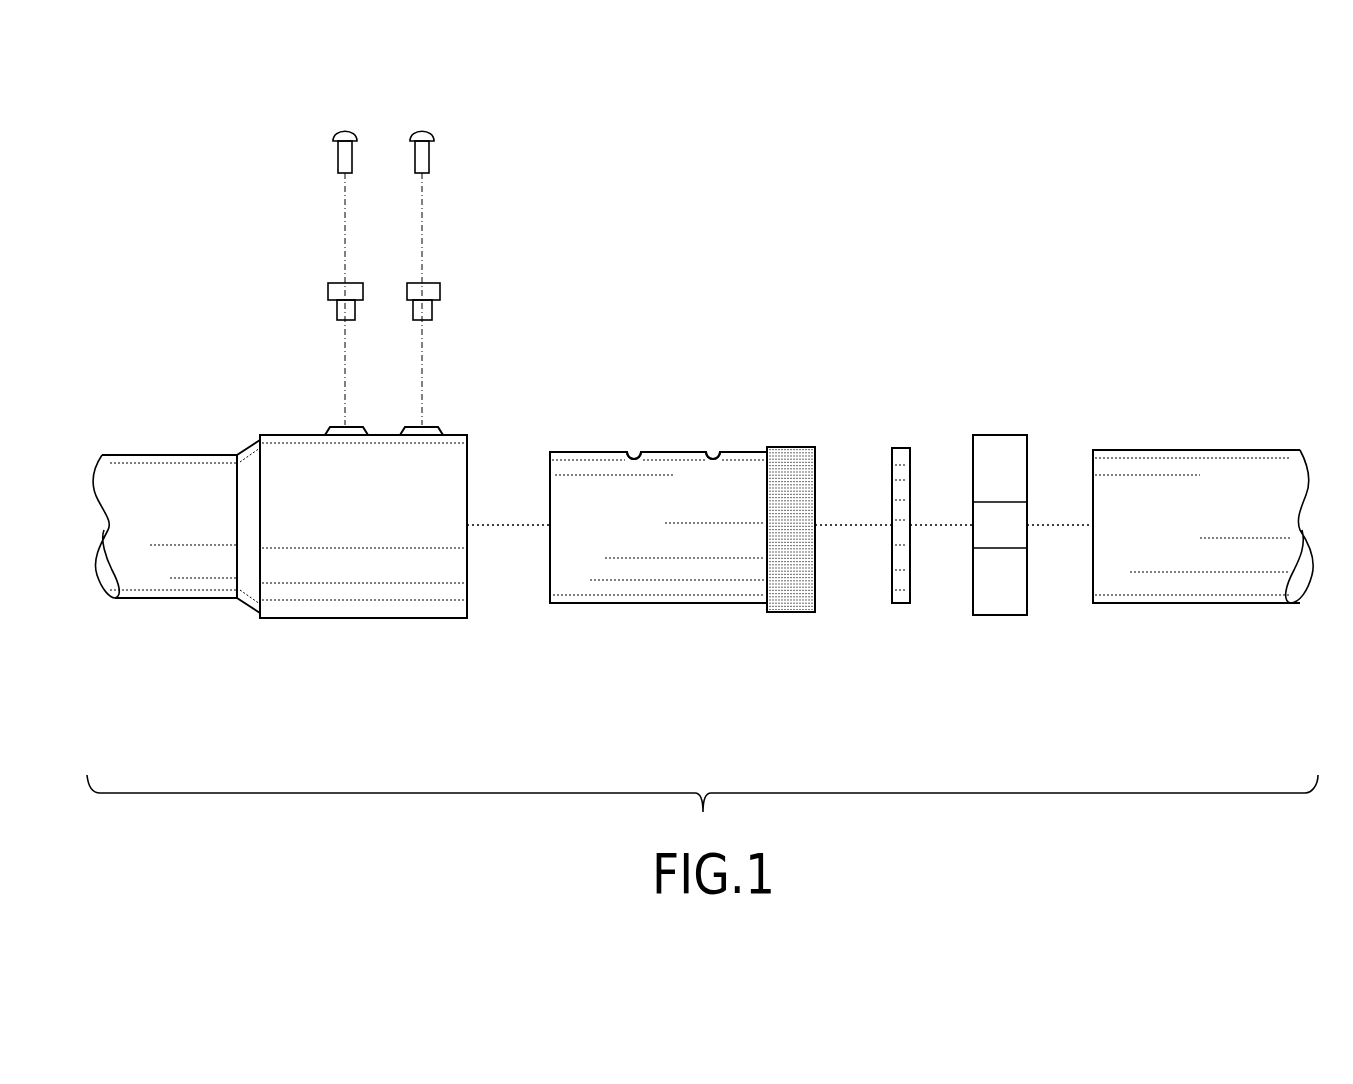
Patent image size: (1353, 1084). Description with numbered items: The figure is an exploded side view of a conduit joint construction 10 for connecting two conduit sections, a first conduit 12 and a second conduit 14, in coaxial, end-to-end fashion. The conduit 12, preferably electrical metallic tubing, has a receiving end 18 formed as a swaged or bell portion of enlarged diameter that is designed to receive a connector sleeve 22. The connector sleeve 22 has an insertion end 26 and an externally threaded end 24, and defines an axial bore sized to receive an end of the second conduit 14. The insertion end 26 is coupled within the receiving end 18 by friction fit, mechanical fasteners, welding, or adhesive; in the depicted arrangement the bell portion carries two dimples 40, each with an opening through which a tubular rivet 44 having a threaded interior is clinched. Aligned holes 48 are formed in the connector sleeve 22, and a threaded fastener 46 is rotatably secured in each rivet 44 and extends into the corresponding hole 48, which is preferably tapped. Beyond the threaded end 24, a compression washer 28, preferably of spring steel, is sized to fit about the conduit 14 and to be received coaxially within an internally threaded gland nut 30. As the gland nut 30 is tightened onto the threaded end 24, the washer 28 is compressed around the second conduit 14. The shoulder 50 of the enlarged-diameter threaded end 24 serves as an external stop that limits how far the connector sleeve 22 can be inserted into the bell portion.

The conduit joint construction 10 is at (990, 308).
The conduit 12 is at (150, 598).
The second conduit 14 is at (1140, 605).
The receiving end 18 is at (380, 618).
The connector sleeve 22 is at (694, 612).
The externally threaded end 24 is at (797, 614).
The insertion end 26 is at (578, 604).
The compression washer 28 is at (902, 606).
The gland nut 30 is at (1000, 615).
The dimples 40 is at (326, 428).
The tubular rivet 44 is at (328, 291).
The threaded fastener 46 is at (338, 153).
The holes 48 is at (713, 452).
The shoulder 50 is at (766, 447).